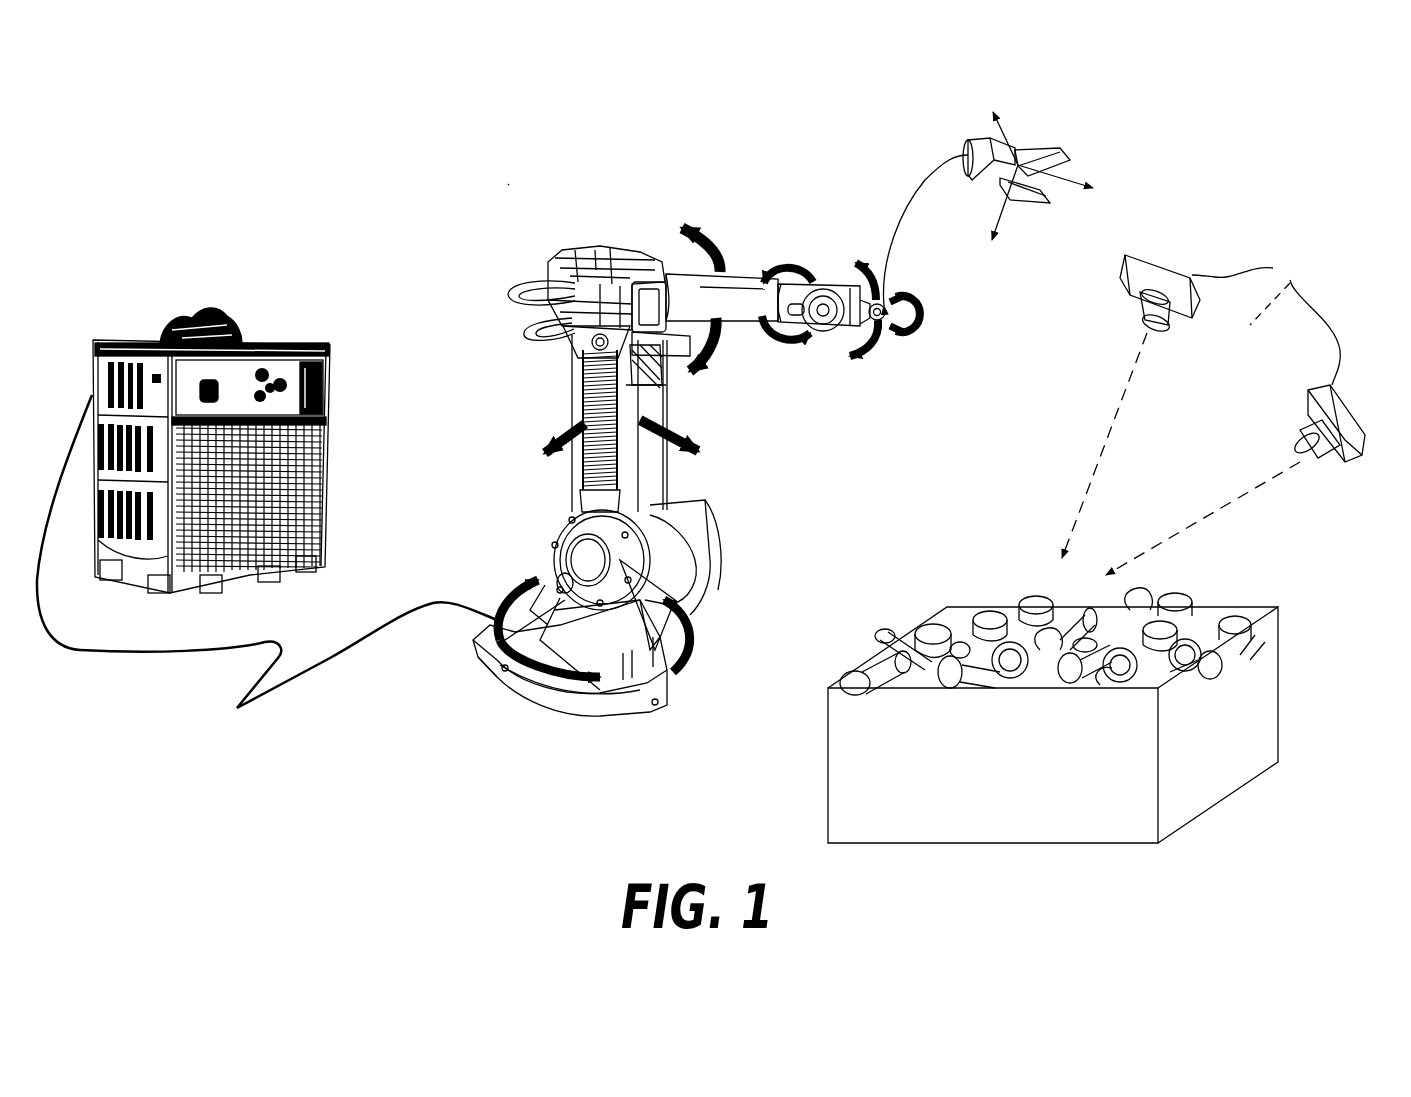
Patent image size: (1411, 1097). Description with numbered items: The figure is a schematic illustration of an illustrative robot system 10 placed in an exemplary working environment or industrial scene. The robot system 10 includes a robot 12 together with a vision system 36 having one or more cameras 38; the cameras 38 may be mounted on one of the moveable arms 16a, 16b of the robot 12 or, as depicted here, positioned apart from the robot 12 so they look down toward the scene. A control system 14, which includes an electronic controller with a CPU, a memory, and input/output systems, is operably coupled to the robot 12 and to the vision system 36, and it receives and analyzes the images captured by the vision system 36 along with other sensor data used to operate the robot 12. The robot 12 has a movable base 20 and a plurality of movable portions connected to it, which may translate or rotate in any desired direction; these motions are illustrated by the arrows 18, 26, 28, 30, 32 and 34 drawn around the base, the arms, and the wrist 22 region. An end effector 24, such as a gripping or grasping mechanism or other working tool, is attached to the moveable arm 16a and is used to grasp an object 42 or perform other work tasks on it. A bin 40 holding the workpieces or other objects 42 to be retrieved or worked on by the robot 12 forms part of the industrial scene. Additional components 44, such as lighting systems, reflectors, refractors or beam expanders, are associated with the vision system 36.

The robot system 10 is at (508, 185).
The robot 12 is at (500, 272).
The control system 14 is at (146, 307).
The moveable arm 16a is at (733, 316).
The moveable arm 16b is at (655, 465).
The arrow 18 is at (695, 592).
The movable base 20 is at (612, 702).
The wrist 22 is at (825, 288).
The end effector 24 is at (988, 193).
The arrow 26 is at (526, 463).
The arrow 28 is at (700, 220).
The arrow 30 is at (795, 265).
The arrow 32 is at (880, 345).
The arrow 34 is at (928, 312).
The vision system 36 is at (1306, 276).
The camera 38 is at (1172, 255).
The bin 40 is at (855, 770).
The object 42 is at (1212, 612).
The additional component 44 is at (1257, 356).